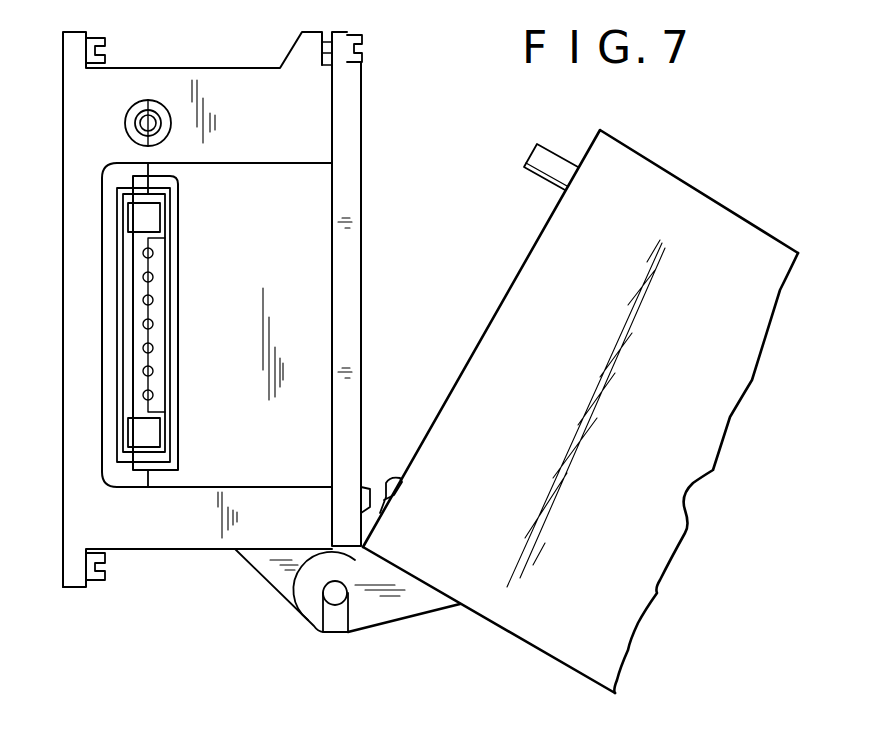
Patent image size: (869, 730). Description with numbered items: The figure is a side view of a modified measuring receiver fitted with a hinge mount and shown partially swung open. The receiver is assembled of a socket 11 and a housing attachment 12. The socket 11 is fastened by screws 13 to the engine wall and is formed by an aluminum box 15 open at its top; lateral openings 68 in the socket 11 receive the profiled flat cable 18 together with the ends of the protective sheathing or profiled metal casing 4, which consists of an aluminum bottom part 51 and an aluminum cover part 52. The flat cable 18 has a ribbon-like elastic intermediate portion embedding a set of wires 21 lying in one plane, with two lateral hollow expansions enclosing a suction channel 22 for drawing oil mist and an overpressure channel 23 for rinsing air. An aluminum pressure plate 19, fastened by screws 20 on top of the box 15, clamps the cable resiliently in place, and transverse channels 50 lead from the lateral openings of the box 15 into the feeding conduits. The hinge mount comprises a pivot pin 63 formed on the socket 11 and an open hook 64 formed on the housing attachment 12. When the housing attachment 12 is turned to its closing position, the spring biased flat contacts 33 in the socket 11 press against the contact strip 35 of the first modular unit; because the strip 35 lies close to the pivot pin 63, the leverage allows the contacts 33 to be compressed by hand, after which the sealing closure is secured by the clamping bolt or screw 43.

The profiled metal casing 4 is at (133, 325).
The socket 11 is at (237, 64).
The housing attachment 12 is at (712, 192).
The screws 13 is at (104, 42).
The aluminum box 15 is at (173, 523).
The profiled flat cable 18 is at (130, 340).
The aluminum pressure plate 19 is at (353, 127).
The screws 20 is at (358, 40).
The wires 21 is at (147, 300).
The channel 22 is at (143, 217).
The channel 23 is at (140, 432).
The spring biased flat contacts 33 is at (368, 487).
The contact strip 35 is at (390, 487).
The clamping bolt or screw 43 is at (552, 162).
The transverse channels 50 is at (140, 123).
The aluminum bottom part 51 is at (120, 262).
The aluminum cover part 52 is at (177, 277).
The pivot pin 63 is at (335, 597).
The open hook 64 is at (400, 595).
The lateral openings 68 is at (252, 192).